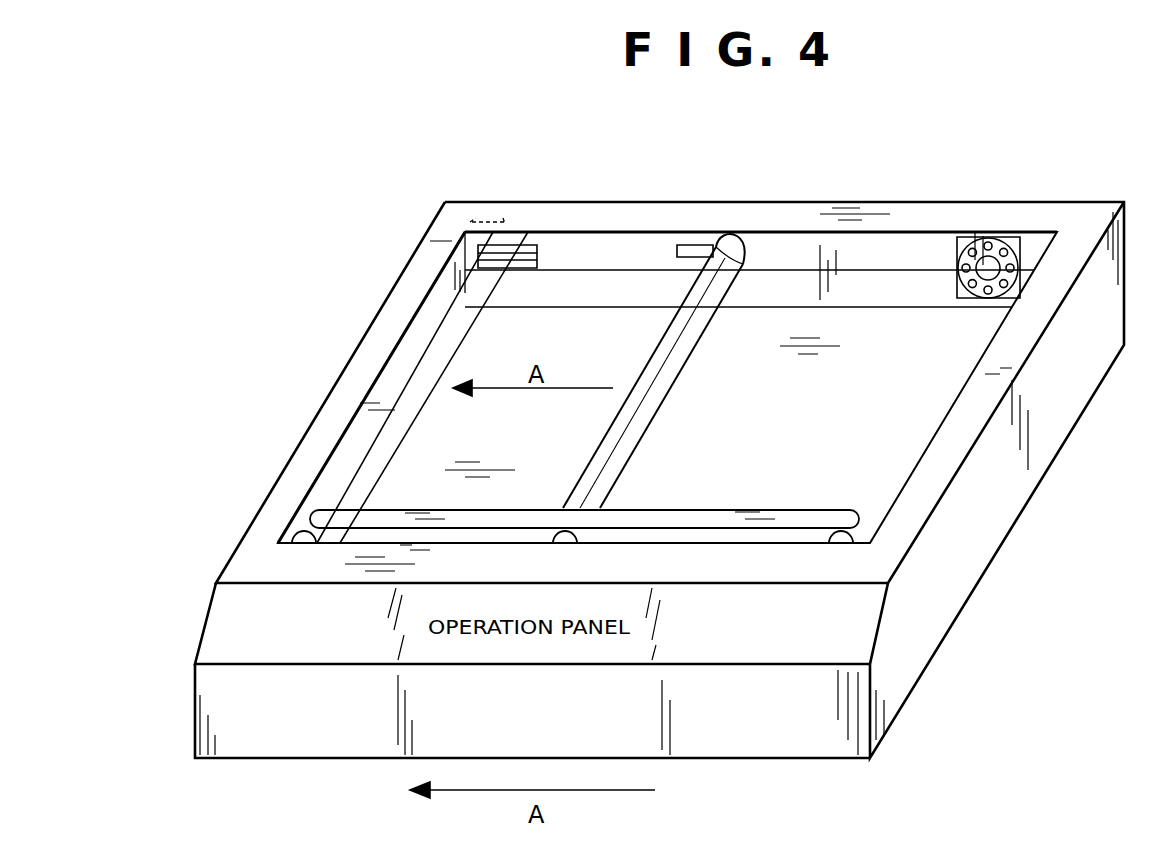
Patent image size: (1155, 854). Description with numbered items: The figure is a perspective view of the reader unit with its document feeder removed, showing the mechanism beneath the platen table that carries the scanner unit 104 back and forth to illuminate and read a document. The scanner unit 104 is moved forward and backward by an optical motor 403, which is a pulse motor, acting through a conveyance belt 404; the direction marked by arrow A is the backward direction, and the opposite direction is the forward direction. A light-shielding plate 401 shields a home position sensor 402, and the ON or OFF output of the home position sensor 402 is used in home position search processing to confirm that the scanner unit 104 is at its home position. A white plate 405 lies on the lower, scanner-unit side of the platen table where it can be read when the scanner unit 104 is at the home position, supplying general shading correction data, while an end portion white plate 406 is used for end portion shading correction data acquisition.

The scanner unit 104 is at (735, 240).
The light-shielding plate 401 is at (682, 242).
The home position (HP) sensor 402 is at (540, 242).
The optical motor 403 is at (957, 262).
The conveyance belt 404 is at (307, 523).
The white plate 405 is at (425, 377).
The end portion white plate 406 is at (478, 222).